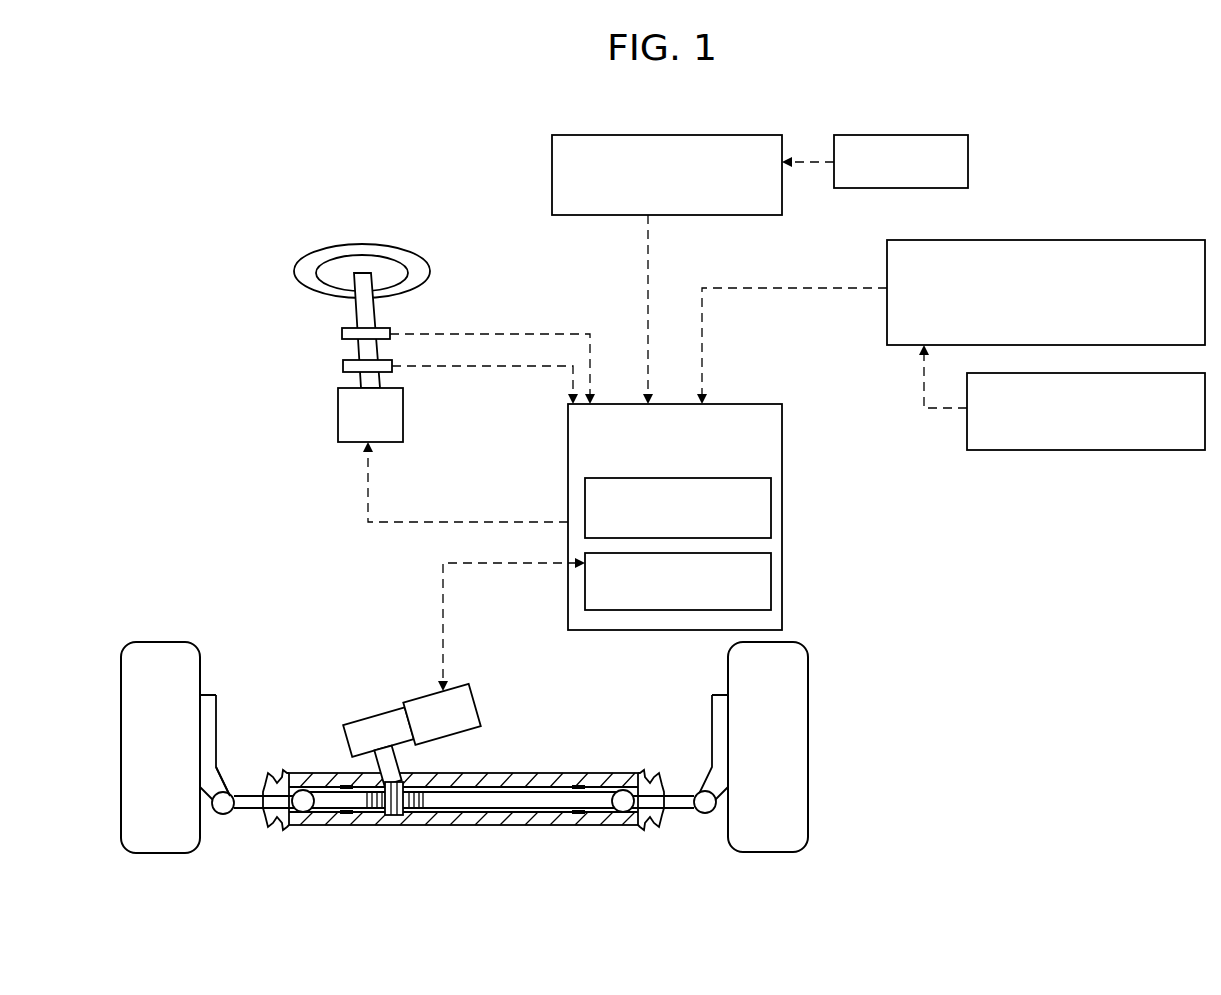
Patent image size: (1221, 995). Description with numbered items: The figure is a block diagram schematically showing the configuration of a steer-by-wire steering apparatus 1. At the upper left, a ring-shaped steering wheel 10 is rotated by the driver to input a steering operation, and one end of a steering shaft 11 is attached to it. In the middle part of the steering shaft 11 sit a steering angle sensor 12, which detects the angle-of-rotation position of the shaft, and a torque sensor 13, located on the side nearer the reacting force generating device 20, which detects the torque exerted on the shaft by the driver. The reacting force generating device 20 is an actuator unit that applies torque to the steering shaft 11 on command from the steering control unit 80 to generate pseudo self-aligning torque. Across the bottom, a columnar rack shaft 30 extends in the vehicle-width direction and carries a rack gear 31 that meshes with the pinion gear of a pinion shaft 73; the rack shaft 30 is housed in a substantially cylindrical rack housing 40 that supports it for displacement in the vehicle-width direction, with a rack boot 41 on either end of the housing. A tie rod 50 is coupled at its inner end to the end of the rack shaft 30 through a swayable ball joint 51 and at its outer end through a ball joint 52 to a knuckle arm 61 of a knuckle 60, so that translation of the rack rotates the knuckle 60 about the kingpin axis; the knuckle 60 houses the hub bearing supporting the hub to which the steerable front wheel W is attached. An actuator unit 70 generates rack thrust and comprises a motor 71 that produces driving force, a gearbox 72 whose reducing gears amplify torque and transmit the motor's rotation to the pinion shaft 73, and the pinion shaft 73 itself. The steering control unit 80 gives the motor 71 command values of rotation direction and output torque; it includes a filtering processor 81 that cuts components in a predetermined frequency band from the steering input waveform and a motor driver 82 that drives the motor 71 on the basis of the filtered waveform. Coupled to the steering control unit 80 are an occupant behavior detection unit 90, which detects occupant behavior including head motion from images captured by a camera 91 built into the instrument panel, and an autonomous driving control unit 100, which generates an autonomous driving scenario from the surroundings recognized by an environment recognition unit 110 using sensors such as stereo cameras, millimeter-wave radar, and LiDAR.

The steering apparatus 1 is at (244, 252).
The steering wheel 10 is at (345, 244).
The steering shaft 11 is at (376, 278).
The steering angle sensor 12 is at (342, 333).
The torque sensor 13 is at (343, 366).
The reacting force generating device 20 is at (338, 413).
The rack shaft 30 is at (470, 806).
The rack gear 31 is at (417, 810).
The rack housing 40 is at (510, 826).
The rack boot 41 is at (276, 831).
The tie rod 50 is at (262, 810).
The ball joint 51 is at (306, 813).
The ball joint 52 is at (222, 815).
The knuckle 60 is at (207, 712).
The knuckle arm 61 is at (222, 790).
The actuator unit 70 is at (326, 661).
The motor 71 is at (418, 694).
The gearbox 72 is at (350, 745).
The pinion shaft 73 is at (393, 817).
The steering control unit 80 is at (782, 438).
The filtering processor 81 is at (771, 505).
The motor driver 82 is at (771, 580).
The occupant behavior detection unit 90 is at (723, 135).
The camera 91 is at (909, 135).
The autonomous driving control unit 100 is at (1128, 240).
The environment recognition unit 110 is at (1128, 450).
The wheel W is at (150, 642).